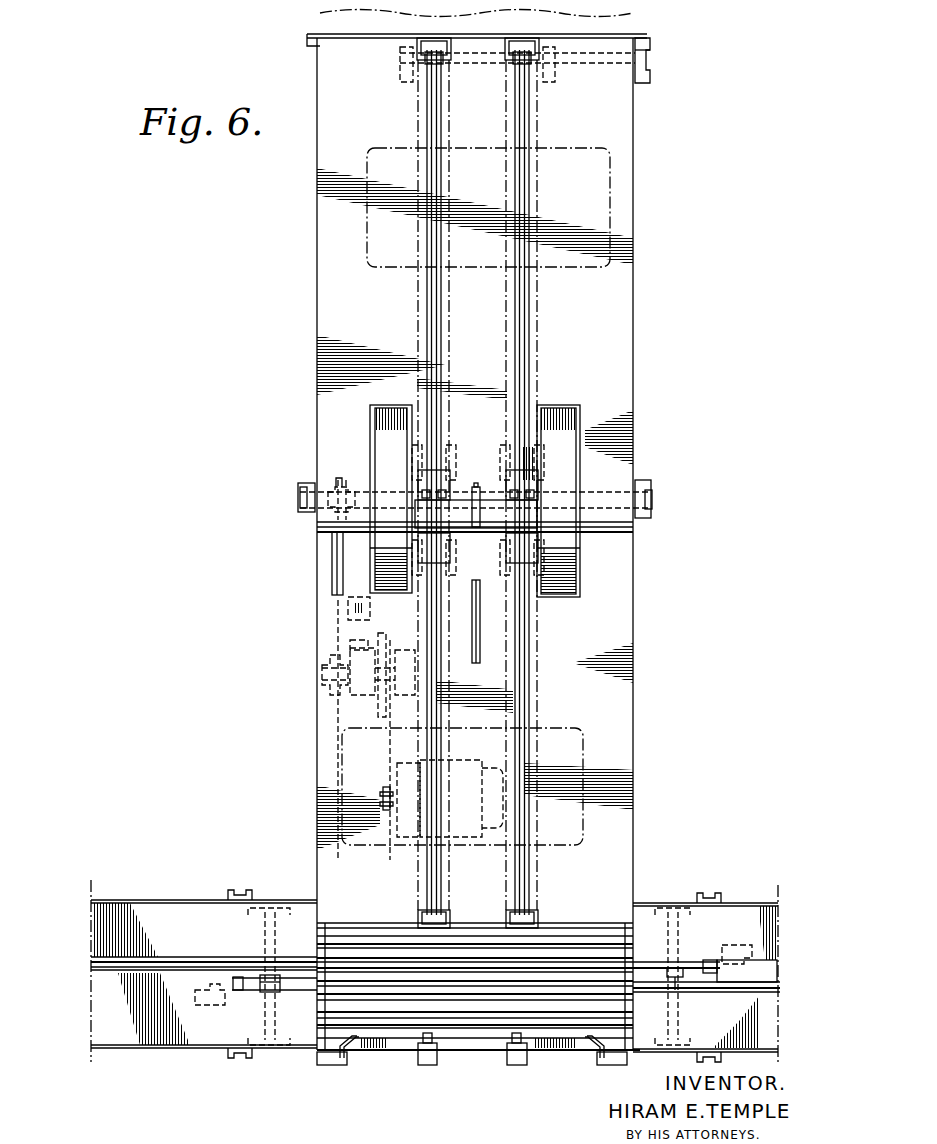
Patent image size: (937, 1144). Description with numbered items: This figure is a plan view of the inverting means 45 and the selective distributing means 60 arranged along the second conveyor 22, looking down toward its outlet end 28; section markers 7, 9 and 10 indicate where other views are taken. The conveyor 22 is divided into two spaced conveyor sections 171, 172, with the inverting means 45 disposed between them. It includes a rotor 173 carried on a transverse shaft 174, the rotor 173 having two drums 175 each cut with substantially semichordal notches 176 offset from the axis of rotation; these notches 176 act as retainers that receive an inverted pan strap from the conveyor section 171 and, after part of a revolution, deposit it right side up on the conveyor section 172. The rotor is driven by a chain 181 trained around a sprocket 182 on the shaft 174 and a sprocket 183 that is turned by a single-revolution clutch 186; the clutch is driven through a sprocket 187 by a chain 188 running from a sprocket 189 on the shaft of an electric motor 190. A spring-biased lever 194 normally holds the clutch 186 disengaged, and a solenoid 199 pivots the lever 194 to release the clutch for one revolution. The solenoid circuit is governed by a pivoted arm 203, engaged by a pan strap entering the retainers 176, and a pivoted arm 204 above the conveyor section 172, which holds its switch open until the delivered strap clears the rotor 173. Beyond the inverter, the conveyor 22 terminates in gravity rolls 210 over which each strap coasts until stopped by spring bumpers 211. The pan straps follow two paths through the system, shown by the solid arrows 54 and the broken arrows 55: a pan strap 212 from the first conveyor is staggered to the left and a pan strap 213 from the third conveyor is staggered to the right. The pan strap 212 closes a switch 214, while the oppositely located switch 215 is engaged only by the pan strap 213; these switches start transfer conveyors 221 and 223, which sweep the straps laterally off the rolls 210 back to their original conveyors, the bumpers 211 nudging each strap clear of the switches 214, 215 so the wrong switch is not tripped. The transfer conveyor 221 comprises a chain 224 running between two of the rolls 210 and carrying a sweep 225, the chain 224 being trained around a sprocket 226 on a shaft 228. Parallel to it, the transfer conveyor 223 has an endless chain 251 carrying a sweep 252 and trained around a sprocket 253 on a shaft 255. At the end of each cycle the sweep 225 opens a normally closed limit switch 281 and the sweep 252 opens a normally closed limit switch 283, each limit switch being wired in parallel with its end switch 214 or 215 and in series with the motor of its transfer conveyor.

The section line 7- 7 is at (473, 93).
The section line 9- 9 is at (377, 733).
The section line 10- 10 is at (165, 983).
The second conveyor 22 is at (632, 343).
The outlet end 28 is at (612, 900).
The inverting means 45 is at (587, 463).
The solid arrows 54 is at (399, 278).
The broken arrows 55 is at (575, 330).
The selective distributing means 60 is at (403, 1072).
The conveyor section 171 is at (607, 380).
The conveyor section 172 is at (600, 633).
The rotor 173 is at (583, 486).
The shaft 174 is at (612, 508).
The drums 175 is at (375, 548).
The notches 176 is at (387, 420).
The chain 181 is at (337, 577).
The sprocket 182 is at (336, 476).
The sprocket 183 is at (325, 692).
The single-revolution clutch 186 is at (352, 658).
The sprocket 187 is at (380, 706).
The chain 188 is at (380, 750).
The sprocket 189 is at (383, 800).
The electric motor 190 is at (465, 776).
The lever 194 is at (355, 633).
The solenoid 199 is at (348, 607).
The pivoted arm 203 is at (480, 492).
The pivoted arm 204 is at (478, 662).
The gravity rolls 210 is at (572, 940).
The spring bumpers 211 is at (427, 1058).
The pan strap 212 is at (342, 778).
The pan strap 213 is at (610, 203).
The switch 214 is at (330, 1058).
The switch 215 is at (597, 1058).
The transfer conveyor 221 is at (757, 982).
The transfer conveyor 223 is at (205, 958).
The chain 224 is at (295, 992).
The sweep 225 is at (238, 992).
The sprocket 226 is at (265, 978).
The shaft 228 is at (272, 908).
The endless chain 251 is at (159, 960).
The sweep 252 is at (710, 953).
The sprocket 253 is at (678, 980).
The shaft 255 is at (675, 908).
The limit switch 281 is at (208, 1005).
The limit switch 283 is at (740, 940).